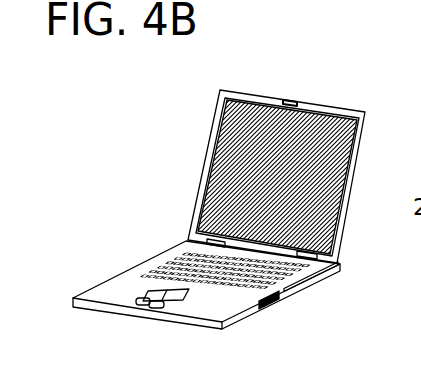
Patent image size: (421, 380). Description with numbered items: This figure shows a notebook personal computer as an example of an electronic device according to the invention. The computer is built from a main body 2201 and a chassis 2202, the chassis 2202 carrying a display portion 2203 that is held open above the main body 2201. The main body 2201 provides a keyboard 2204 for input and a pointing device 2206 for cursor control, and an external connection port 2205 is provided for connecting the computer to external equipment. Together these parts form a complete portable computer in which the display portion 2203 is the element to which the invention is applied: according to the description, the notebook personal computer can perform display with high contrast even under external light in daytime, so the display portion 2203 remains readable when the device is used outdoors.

The main body 2201 is at (118, 297).
The chassis 2202 is at (213, 124).
The display portion 2203 is at (220, 178).
The keyboard 2204 is at (297, 284).
The external connection port 2205 is at (272, 307).
The pointing device 2206 is at (152, 304).